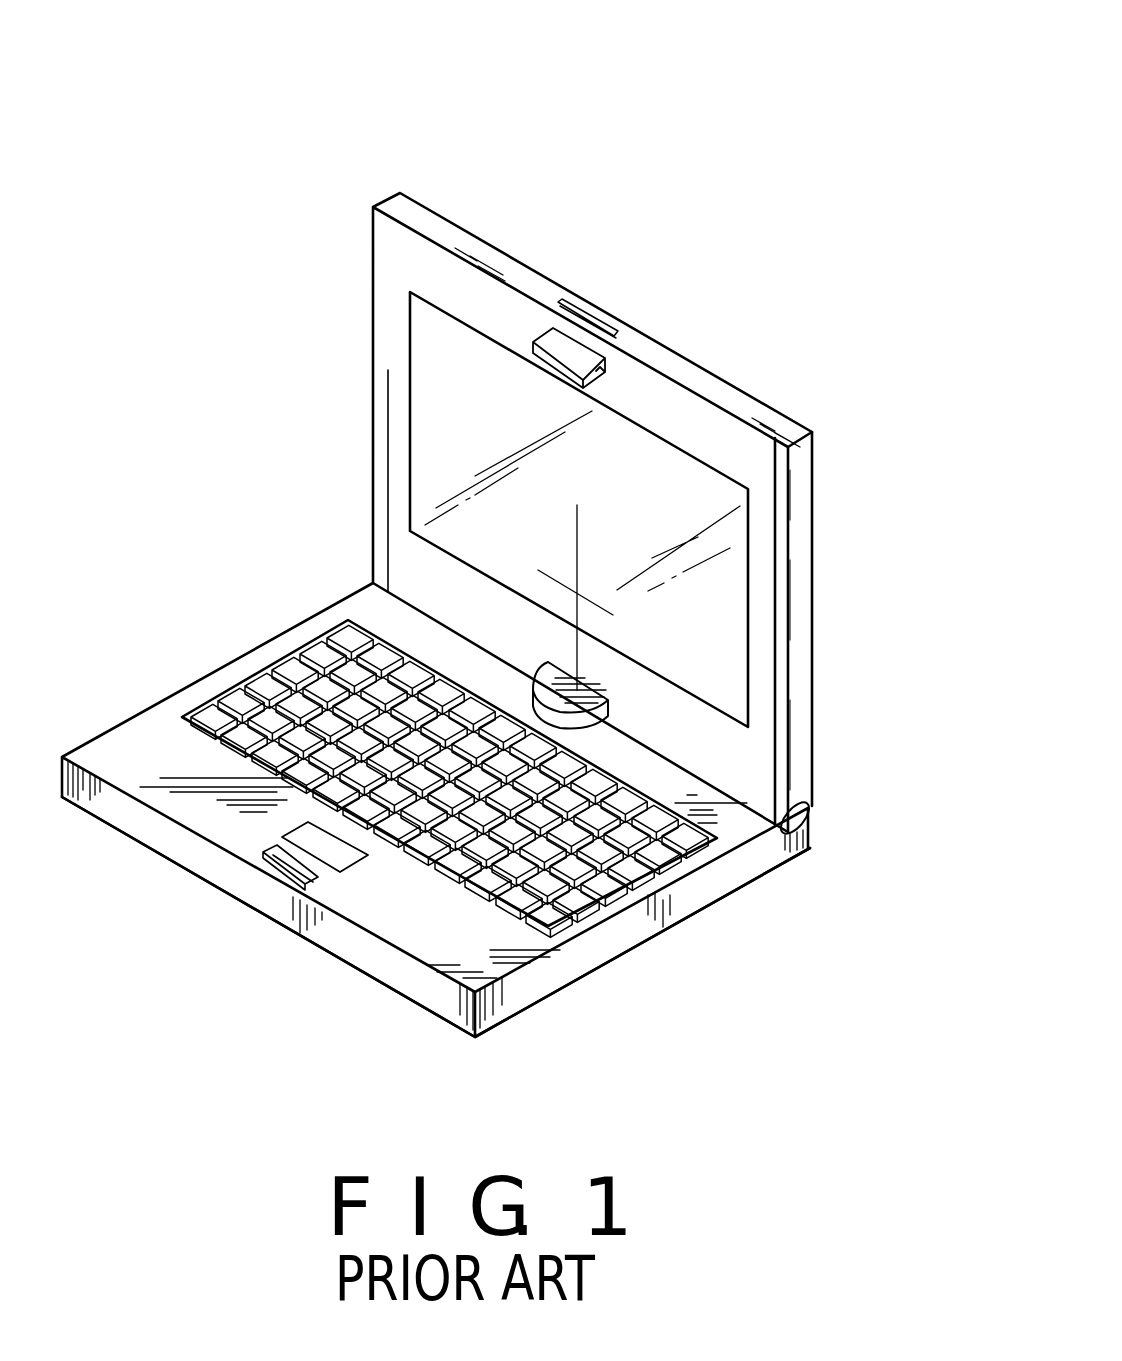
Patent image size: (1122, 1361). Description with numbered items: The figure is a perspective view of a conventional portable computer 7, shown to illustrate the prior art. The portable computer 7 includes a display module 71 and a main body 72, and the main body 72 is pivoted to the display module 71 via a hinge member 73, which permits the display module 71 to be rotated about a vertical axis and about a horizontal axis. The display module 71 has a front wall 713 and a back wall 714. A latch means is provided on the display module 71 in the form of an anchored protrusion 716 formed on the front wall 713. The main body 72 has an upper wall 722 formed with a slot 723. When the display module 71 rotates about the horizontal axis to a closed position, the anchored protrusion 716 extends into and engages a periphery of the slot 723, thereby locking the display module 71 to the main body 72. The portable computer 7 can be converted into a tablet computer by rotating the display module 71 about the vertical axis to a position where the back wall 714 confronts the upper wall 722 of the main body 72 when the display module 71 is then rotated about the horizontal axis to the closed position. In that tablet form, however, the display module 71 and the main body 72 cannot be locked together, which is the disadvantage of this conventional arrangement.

The portable computer 7 is at (258, 253).
The display module 71 is at (825, 468).
The front wall 713 is at (777, 690).
The back wall 714 is at (813, 530).
The anchored protrusion 716 is at (573, 363).
The main body 72 is at (676, 940).
The upper wall 722 is at (483, 983).
The slot 723 is at (290, 866).
The hinge member 73 is at (540, 697).